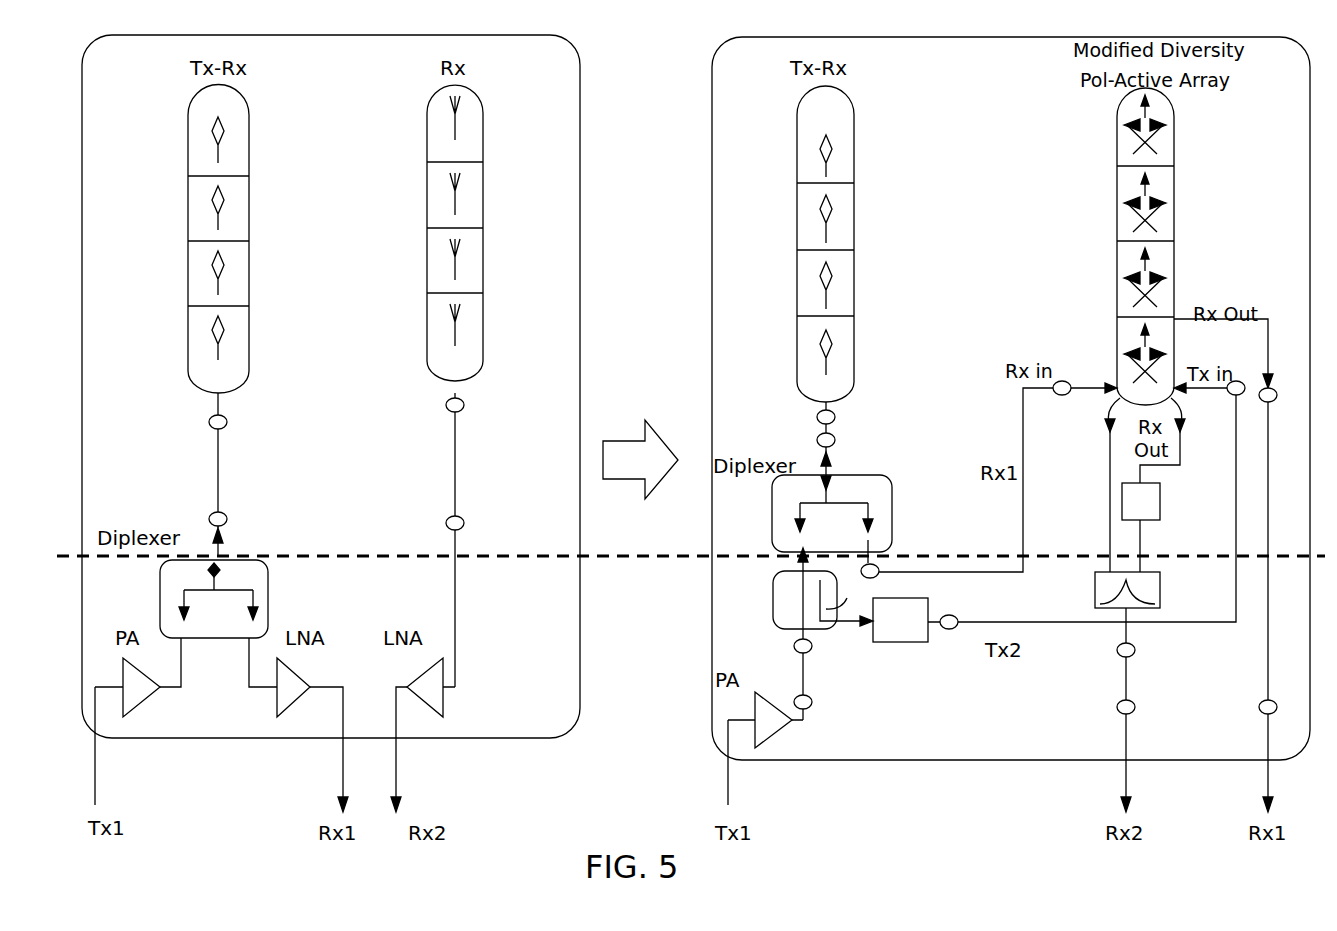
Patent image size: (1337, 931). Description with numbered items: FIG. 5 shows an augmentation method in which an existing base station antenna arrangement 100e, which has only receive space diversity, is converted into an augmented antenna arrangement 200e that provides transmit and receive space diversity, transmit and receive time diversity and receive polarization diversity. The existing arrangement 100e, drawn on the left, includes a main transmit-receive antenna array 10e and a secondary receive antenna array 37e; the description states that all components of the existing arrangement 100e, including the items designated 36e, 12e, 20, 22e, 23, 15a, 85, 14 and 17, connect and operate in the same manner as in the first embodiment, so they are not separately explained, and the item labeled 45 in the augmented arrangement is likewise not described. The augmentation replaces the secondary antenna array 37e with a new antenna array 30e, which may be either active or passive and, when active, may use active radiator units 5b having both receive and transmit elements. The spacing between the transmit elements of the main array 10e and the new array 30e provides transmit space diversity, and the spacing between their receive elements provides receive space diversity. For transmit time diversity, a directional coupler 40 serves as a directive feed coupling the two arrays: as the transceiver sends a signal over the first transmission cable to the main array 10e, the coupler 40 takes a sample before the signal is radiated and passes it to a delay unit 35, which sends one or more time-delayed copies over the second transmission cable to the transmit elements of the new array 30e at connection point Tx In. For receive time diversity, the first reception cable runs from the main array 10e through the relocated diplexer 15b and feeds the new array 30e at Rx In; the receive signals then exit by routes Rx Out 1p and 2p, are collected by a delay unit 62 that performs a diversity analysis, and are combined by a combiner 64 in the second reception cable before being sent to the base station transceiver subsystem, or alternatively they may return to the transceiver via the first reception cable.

The existing base station antenna arrangement 100e is at (346, 36).
The augmented antenna array 200e is at (845, 38).
The main antenna array 10e is at (496, 243).
The Tx-Rx antenna elements 36e is at (188, 116).
The Rx antenna array 12e is at (426, 188).
The secondary antenna array 37e is at (484, 106).
The Tx-Rx feed line 20 is at (214, 461).
The Rx feed line 22e is at (455, 462).
The boundary between antenna and radio 23 is at (80, 558).
The diplexer 15a is at (268, 570).
The relocated diplexer 15b is at (771, 501).
The power amplifier 85 is at (142, 702).
The low noise amplifier 14 is at (272, 694).
The low noise amplifier 17 is at (447, 698).
The new antenna array 30e is at (1184, 246).
The active radiator unit 5b is at (1158, 213).
The directional coupler 40 is at (772, 600).
The PA output line 45 is at (797, 652).
The delay unit 35 is at (925, 645).
The delay unit 62 is at (1163, 525).
The combiner 64 is at (1160, 593).
The Rx Out route 1p is at (1101, 485).
The Rx Out route 2p is at (1179, 440).